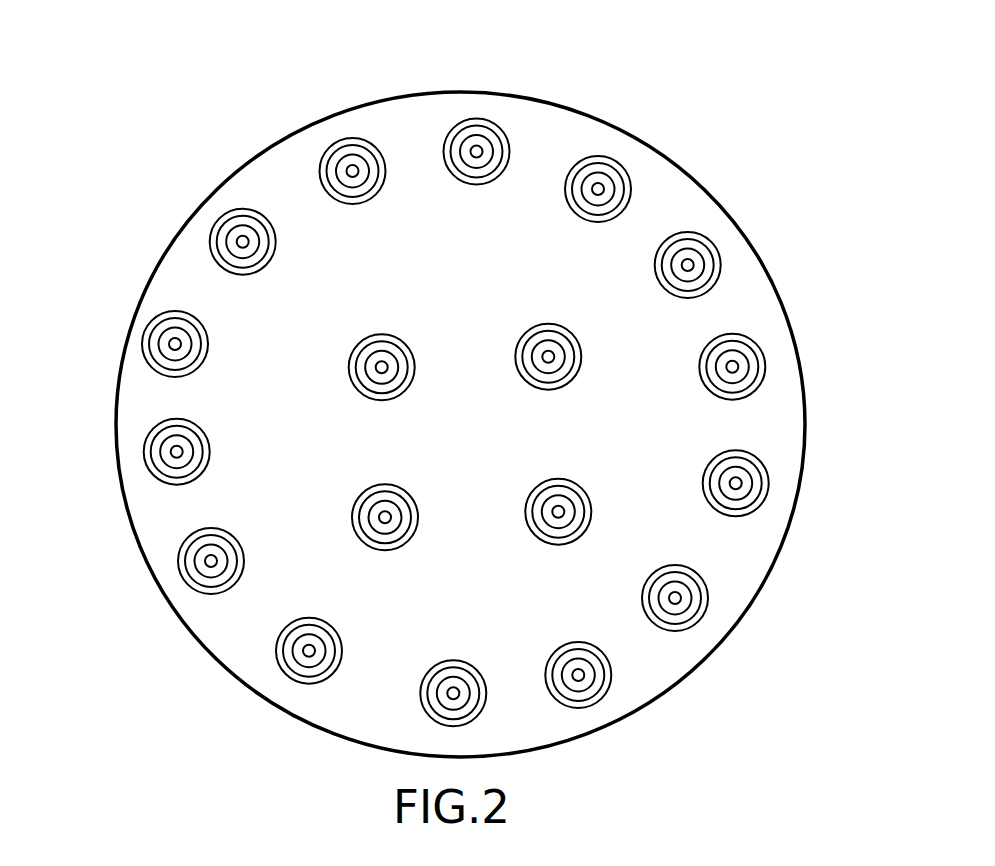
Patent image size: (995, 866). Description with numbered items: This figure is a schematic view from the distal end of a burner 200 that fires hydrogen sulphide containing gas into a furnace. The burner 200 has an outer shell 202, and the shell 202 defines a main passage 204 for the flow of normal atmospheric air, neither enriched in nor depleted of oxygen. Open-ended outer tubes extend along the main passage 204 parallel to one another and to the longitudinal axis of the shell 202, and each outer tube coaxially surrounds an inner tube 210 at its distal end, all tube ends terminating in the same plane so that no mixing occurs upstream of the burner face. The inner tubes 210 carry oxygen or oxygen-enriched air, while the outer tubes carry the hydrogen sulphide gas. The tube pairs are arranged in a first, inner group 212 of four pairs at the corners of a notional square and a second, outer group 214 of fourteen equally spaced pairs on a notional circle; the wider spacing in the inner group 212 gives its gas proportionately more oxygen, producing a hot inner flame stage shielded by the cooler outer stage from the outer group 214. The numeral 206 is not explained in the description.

The burner 200 is at (464, 385).
The outer shell 202 is at (123, 502).
The main passage 204 is at (186, 402).
The concentric ring test pattern 206 is at (578, 373).
The inner tube 210 is at (297, 658).
The first, inner group 212 is at (383, 327).
The second, outer group 214 is at (698, 256).